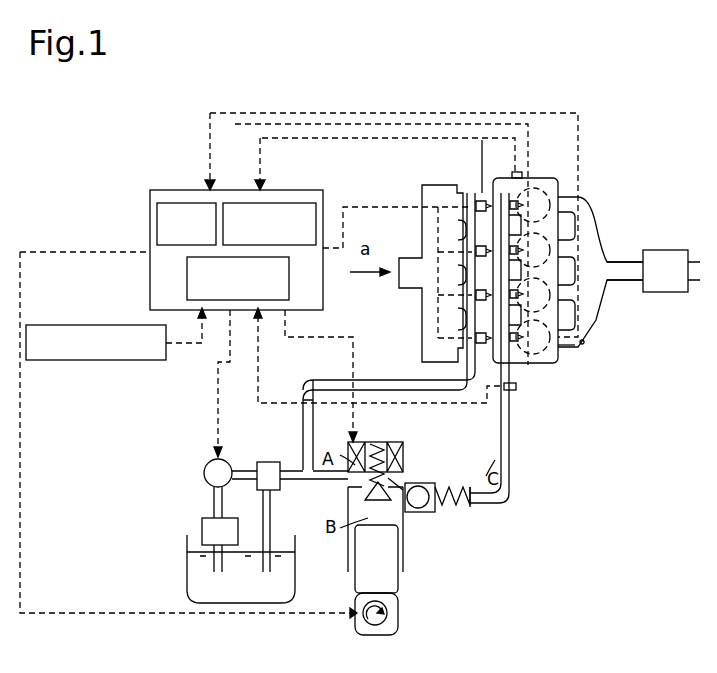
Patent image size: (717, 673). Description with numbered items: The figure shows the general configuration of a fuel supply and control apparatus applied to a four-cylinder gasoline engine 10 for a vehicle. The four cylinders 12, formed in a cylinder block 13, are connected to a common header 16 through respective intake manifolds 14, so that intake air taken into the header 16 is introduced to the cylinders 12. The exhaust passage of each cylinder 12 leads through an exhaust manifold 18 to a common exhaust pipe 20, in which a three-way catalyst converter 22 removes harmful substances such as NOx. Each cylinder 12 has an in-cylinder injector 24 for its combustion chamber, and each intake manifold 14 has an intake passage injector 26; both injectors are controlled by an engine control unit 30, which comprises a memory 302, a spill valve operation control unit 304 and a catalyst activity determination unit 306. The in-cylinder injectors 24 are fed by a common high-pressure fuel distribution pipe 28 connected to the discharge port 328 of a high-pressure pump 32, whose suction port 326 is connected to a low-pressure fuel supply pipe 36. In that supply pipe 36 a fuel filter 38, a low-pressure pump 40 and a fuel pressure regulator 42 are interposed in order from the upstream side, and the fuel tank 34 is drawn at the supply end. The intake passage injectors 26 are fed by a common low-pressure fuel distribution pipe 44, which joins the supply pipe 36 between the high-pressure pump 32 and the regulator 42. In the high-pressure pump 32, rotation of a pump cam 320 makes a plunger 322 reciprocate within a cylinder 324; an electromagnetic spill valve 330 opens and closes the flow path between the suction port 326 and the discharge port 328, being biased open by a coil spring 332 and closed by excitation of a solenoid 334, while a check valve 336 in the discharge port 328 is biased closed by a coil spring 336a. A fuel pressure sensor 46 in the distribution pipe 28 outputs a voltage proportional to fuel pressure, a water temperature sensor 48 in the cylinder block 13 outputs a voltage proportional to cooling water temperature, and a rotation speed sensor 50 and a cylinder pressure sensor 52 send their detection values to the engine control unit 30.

The engine 10 is at (600, 158).
The cylinder 12 is at (540, 178).
The cylinder block 13 is at (560, 358).
The intake manifold 14 is at (478, 200).
The header 16 is at (420, 186).
The exhaust manifold 18 is at (582, 192).
The exhaust pipe 20 is at (620, 262).
The three-way catalyst converter 22 is at (670, 250).
The in-cylinder injector 24 is at (520, 345).
The intake passage injector 26 is at (482, 192).
The high-pressure fuel distribution pipe 28 is at (512, 480).
The engine control unit 30 is at (192, 190).
The high-pressure pump 32 is at (436, 536).
The fuel tank 34 is at (187, 574).
The low-pressure fuel supply pipe 36 is at (298, 480).
The fuel filter 38 is at (205, 518).
The low-pressure pump 40 is at (212, 463).
The fuel pressure regulator 42 is at (258, 462).
The low-pressure fuel distribution pipe 44 is at (403, 380).
The fuel pressure sensor 46 is at (516, 390).
The water temperature sensor 48 is at (518, 172).
The rotation speed sensor 50 is at (60, 325).
The cylinder pressure sensor 52 is at (584, 342).
The memory 302 is at (157, 216).
The spill valve operation control unit 304 is at (187, 272).
The catalyst activity determination unit 306 is at (290, 203).
The pump cam 320 is at (400, 628).
The plunger 322 is at (400, 585).
The cylinder 324 is at (406, 560).
The suction port 326 is at (365, 490).
The discharge port 328 is at (422, 484).
The electromagnetic spill valve 330 is at (390, 502).
The coil spring 332 is at (372, 444).
The solenoid 334 is at (403, 460).
The check valve 336 is at (440, 502).
The coil spring 336a is at (472, 494).